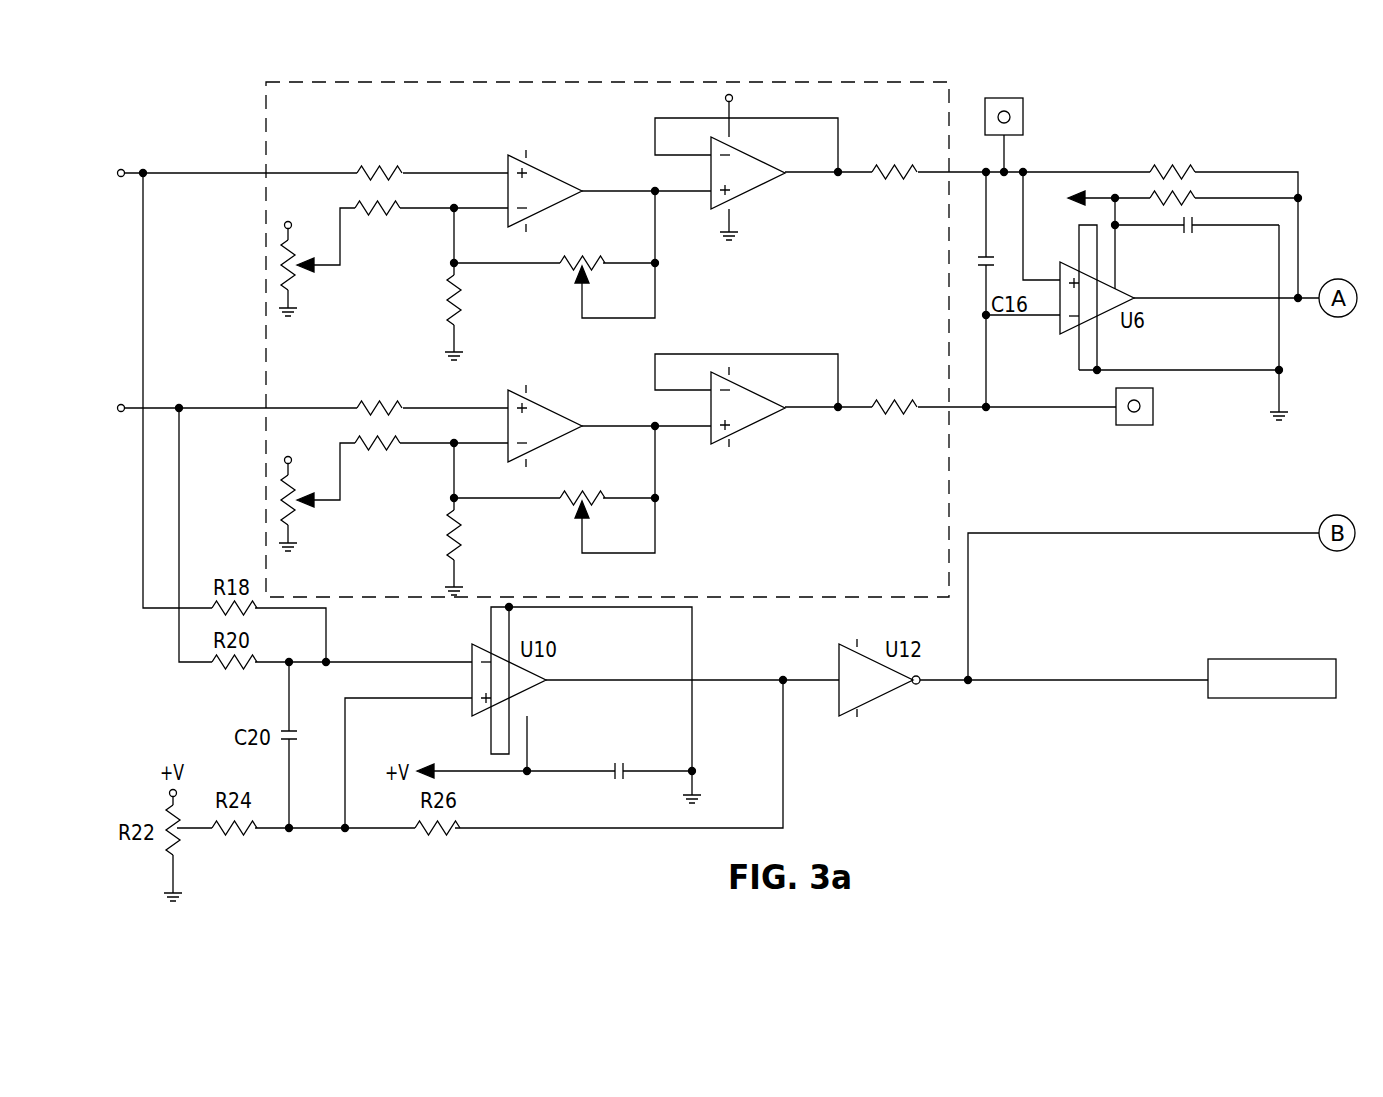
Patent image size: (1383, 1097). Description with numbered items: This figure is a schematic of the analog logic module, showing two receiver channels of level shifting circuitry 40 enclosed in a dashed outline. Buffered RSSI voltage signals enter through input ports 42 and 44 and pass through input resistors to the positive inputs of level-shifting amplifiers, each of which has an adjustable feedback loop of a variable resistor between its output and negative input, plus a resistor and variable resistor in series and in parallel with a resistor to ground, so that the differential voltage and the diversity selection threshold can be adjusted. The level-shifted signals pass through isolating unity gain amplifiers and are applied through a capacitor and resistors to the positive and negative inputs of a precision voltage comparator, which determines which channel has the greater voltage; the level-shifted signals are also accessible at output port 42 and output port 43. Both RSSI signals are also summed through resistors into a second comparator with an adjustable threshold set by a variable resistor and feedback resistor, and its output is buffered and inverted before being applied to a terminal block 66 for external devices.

The level shifting circuitry 40 is at (251, 86).
The input port 42 is at (121, 169).
The output port 43 is at (1153, 406).
The input port 44 is at (121, 404).
The terminal block 66 is at (1270, 659).